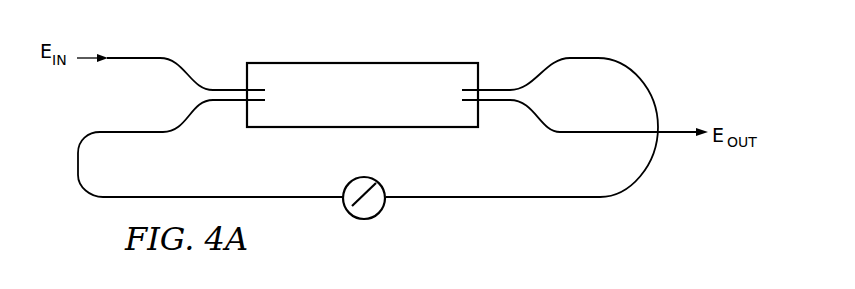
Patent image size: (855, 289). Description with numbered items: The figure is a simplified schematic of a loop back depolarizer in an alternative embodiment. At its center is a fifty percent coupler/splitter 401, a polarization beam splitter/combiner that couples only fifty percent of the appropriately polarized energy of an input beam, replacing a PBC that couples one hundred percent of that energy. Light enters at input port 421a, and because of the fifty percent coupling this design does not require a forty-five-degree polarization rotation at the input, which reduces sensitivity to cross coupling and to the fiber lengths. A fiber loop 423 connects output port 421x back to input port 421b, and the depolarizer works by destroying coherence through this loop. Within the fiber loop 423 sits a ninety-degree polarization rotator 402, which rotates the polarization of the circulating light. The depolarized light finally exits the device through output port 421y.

The 50 percent coupler/splitter 401 is at (310, 62).
The 90-degree polarization rotator 402 is at (362, 219).
The input port 421a is at (140, 57).
The input port 421b is at (142, 131).
The output port 421x is at (578, 57).
The output port 421y is at (673, 130).
The fiber loop 423 is at (500, 198).